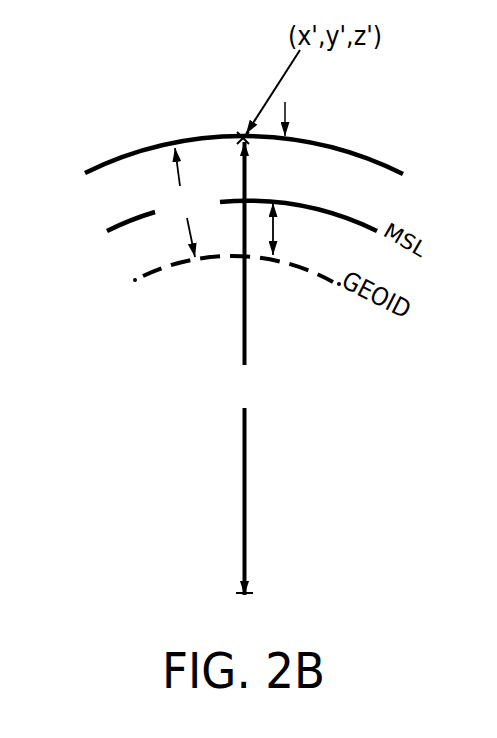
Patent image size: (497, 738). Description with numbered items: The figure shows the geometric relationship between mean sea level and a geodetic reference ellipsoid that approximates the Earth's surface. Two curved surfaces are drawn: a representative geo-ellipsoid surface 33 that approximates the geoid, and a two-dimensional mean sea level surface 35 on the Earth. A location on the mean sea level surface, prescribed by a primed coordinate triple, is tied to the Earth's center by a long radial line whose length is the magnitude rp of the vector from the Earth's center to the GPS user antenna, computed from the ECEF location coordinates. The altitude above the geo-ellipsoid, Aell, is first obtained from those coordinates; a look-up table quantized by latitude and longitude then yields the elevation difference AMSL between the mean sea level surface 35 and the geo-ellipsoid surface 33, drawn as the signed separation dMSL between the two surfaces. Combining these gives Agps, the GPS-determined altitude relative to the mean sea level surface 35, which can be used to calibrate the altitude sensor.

The geo-ellipsoid surface 33 is at (143, 275).
The MSL surface 35 is at (135, 216).
The magnitude of vector from Earth's center to GPS user antenna rp is at (245, 368).
The elevation difference between MSL surface and geo-ellipsoid surface AMSL is at (288, 167).
The GPS-determined altitude relative to MSL surface Agps is at (343, 212).
The altitude above geo-ellipsoid surface Aell is at (188, 202).
The signed distance of MSL surface above geo-ellipsoid surface dMSL is at (307, 231).